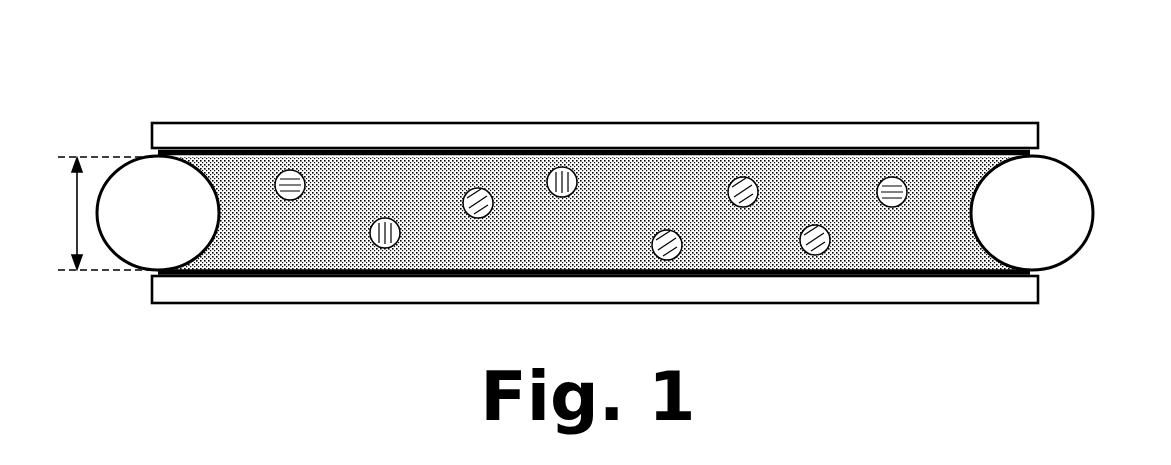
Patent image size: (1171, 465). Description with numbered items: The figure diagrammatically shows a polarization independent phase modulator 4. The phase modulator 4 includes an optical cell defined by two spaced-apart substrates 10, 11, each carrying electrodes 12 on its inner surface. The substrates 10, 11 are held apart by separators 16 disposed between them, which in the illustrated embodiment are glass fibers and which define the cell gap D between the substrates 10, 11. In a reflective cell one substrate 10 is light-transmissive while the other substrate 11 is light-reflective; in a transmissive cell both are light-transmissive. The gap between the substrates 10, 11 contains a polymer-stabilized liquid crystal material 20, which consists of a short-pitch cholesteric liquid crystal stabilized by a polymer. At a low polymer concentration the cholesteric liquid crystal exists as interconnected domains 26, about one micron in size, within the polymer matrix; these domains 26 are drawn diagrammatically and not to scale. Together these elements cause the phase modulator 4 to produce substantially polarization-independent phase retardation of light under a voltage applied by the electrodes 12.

The phase modulator 4 is at (1120, 99).
The substrate 10 is at (383, 131).
The substrate 11 is at (452, 292).
The electrodes 12 is at (685, 272).
The separators 16 is at (175, 242).
The polymer-stabilized liquid crystal material 20 is at (812, 188).
The interconnected domains 26 is at (380, 218).